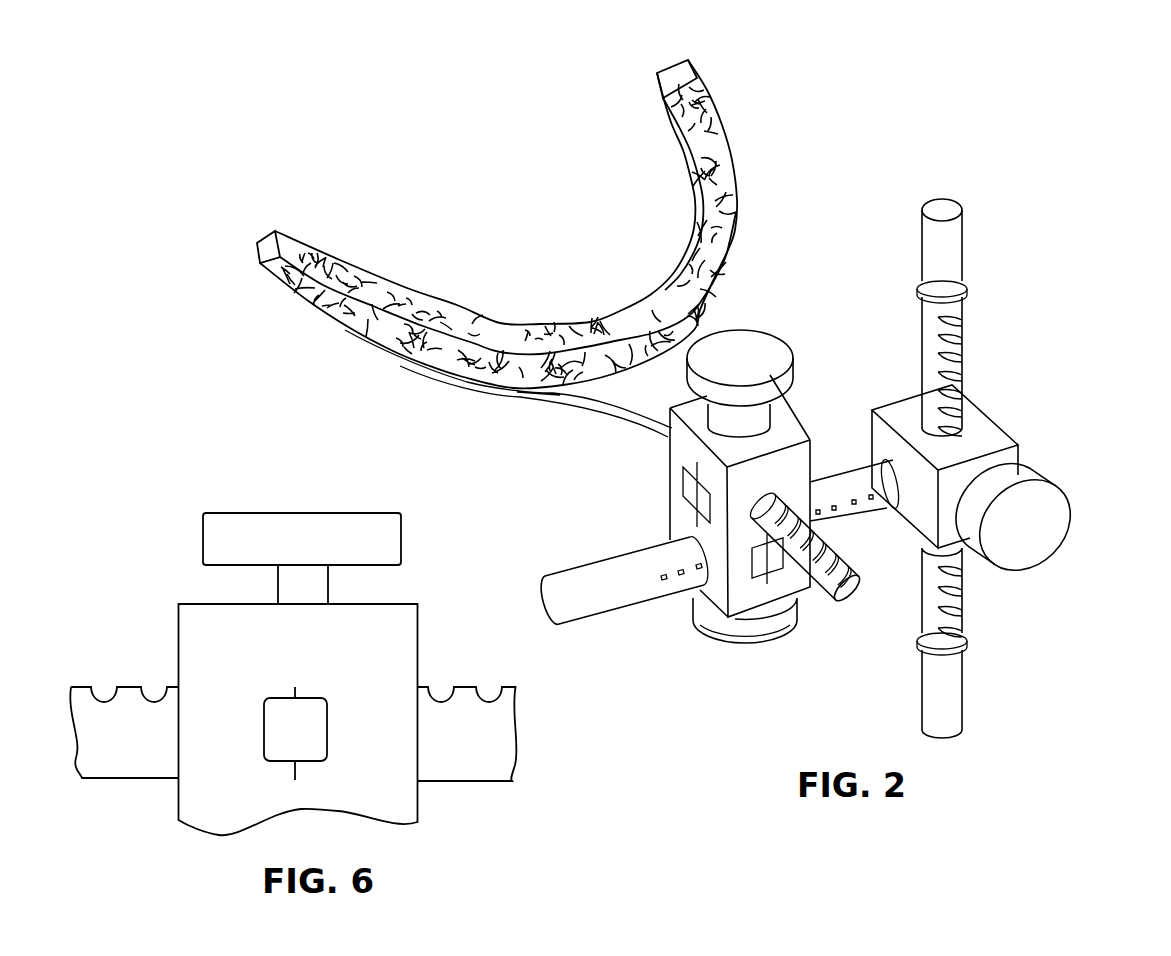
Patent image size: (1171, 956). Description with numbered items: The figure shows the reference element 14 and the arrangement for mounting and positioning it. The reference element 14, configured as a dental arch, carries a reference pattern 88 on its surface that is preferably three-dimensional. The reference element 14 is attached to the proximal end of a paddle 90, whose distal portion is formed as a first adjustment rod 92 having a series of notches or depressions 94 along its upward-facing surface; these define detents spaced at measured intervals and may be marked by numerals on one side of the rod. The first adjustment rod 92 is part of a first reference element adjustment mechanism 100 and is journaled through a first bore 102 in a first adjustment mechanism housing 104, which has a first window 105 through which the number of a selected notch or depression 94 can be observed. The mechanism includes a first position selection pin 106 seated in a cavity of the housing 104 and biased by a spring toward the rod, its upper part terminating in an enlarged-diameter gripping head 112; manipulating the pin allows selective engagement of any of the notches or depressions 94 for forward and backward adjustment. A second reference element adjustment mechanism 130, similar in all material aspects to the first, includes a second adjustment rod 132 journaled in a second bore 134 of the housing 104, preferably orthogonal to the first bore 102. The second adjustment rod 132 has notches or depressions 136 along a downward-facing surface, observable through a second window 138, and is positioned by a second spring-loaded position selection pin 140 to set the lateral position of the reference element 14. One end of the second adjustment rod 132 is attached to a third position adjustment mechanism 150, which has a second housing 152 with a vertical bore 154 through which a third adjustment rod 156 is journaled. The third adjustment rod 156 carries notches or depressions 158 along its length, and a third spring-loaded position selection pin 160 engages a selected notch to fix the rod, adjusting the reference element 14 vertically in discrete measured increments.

In FIG. 2, the reference element 14 is at (738, 230).
In FIG. 2, the reference pattern 88 is at (473, 330).
In FIG. 2, the paddle 90 is at (633, 397).
In FIG. 2, the first reference element adjustment mechanism 100 is at (721, 496).
In FIG. 6, the first reference element adjustment mechanism 100 is at (322, 648).
In FIG. 2, the first bore 102 is at (777, 477).
In FIG. 2, the first adjustment mechanism housing 104 is at (799, 426).
In FIG. 6, the first adjustment mechanism housing 104 is at (178, 641).
In FIG. 2, the first window 105 is at (693, 493).
In FIG. 6, the first window 105 is at (327, 737).
In FIG. 6, the first position selection pin 106 is at (329, 585).
In FIG. 2, the gripping head 112 is at (773, 360).
In FIG. 6, the gripping head 112 is at (362, 515).
In FIG. 2, the second reference element adjustment mechanism 130 is at (737, 650).
In FIG. 2, the second adjustment rod 132 is at (633, 543).
In FIG. 2, the second bore 134 is at (693, 592).
In FIG. 2, the notches or depressions 136 is at (683, 580).
In FIG. 2, the second window 138 is at (797, 603).
In FIG. 2, the second spring-loaded position selection pin 140 is at (768, 643).
In FIG. 2, the first adjustment rod 92 is at (851, 595).
In FIG. 6, the first adjustment rod 92 is at (517, 743).
In FIG. 2, the notches or depressions 94 is at (827, 537).
In FIG. 6, the notches or depressions 94 is at (490, 694).
In FIG. 2, the third position adjustment mechanism 150 is at (1003, 468).
In FIG. 2, the second housing 152 is at (1018, 455).
In FIG. 2, the vertical bore 154 is at (987, 420).
In FIG. 2, the third adjustment rod 156 is at (960, 303).
In FIG. 2, the notches or depressions 158 is at (957, 333).
In FIG. 2, the third spring-loaded position selection pin 160 is at (1062, 528).